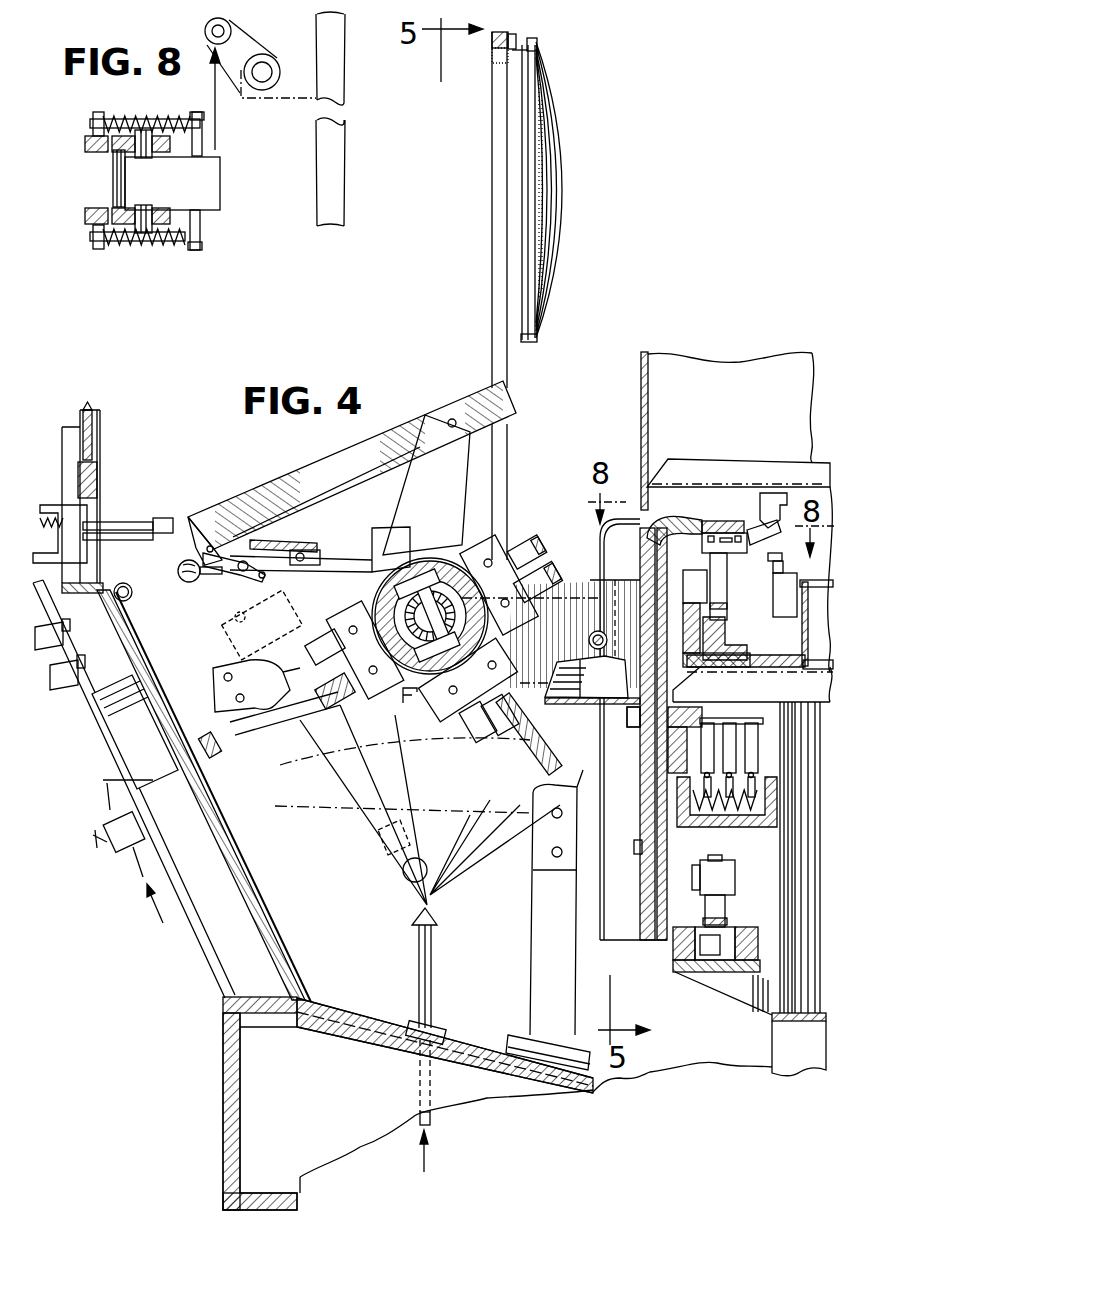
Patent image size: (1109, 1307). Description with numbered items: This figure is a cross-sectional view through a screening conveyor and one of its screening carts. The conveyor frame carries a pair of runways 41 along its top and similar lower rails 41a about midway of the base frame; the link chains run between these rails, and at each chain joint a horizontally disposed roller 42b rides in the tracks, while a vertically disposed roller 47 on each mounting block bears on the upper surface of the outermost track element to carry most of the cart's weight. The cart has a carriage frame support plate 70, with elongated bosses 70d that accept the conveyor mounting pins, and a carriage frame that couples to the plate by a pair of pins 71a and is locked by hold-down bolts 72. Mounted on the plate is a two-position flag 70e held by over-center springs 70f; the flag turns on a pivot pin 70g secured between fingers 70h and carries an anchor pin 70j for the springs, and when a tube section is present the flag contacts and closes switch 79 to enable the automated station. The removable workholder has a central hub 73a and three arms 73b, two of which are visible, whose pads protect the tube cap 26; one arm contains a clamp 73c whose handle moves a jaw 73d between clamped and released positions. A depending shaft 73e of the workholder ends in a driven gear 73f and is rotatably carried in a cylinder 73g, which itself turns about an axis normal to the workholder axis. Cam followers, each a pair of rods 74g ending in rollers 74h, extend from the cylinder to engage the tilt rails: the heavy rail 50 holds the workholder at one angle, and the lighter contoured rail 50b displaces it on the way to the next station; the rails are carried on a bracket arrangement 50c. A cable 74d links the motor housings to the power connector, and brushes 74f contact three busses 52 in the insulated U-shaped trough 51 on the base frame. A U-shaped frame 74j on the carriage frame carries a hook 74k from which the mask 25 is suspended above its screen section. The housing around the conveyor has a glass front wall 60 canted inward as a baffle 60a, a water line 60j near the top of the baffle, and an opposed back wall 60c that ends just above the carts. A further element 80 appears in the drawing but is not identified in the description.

In FIG. 4, the mask 25 is at (550, 236).
In FIG. 4, the tube cap 26 is at (378, 412).
In FIG. 4, the runway 41 is at (745, 642).
In FIG. 4, the lower rails 41a is at (683, 950).
In FIG. 4, the roller 42b is at (700, 980).
In FIG. 4, the roller 47 is at (705, 575).
In FIG. 4, the tilt rail 50 is at (512, 722).
In FIG. 4, the tilt rail 50b is at (235, 660).
In FIG. 4, the bracket arrangement 50c is at (540, 972).
In FIG. 4, the U-shaped trough 51 is at (725, 825).
In FIG. 4, the busses 52 is at (752, 785).
In FIG. 4, the front vertical wall 60 is at (90, 430).
In FIG. 4, the baffle 60a is at (222, 810).
In FIG. 4, the back wall 60c is at (641, 383).
In FIG. 4, the water line 60j is at (135, 571).
In FIG. 4, the carriage frame support plate 70 is at (622, 925).
In FIG. 4, the elongated bosses 70d is at (720, 880).
In FIG. 8, the flag 70e is at (222, 184).
In FIG. 4, the flag 70e is at (757, 525).
In FIG. 8, the springs 70f is at (122, 117).
In FIG. 8, the pivot pin 70g is at (158, 242).
In FIG. 8, the fingers 70h is at (113, 166).
In FIG. 8, the anchor pin 70j is at (200, 220).
In FIG. 4, the pins 71a is at (663, 530).
In FIG. 4, the hold-down bolts 72 is at (630, 716).
In FIG. 4, the central hub 73a is at (395, 598).
In FIG. 4, the arms 73b is at (482, 488).
In FIG. 4, the clamp 73c is at (193, 583).
In FIG. 4, the jaw 73d is at (195, 518).
In FIG. 4, the shaft 73e is at (395, 616).
In FIG. 4, the driven gear 73f is at (418, 688).
In FIG. 4, the cylinder 73g is at (442, 570).
In FIG. 4, the cable 74d is at (589, 642).
In FIG. 4, the brushes 74f is at (712, 780).
In FIG. 4, the rods 74g is at (528, 549).
In FIG. 4, the rollers 74h is at (548, 572).
In FIG. 4, the U-shaped frame 74j is at (497, 245).
In FIG. 4, the hook 74k is at (515, 50).
In FIG. 8, the switch 79 is at (286, 90).
In FIG. 4, the switch 79 is at (783, 606).
In FIG. 4, the bolt 80 is at (140, 520).